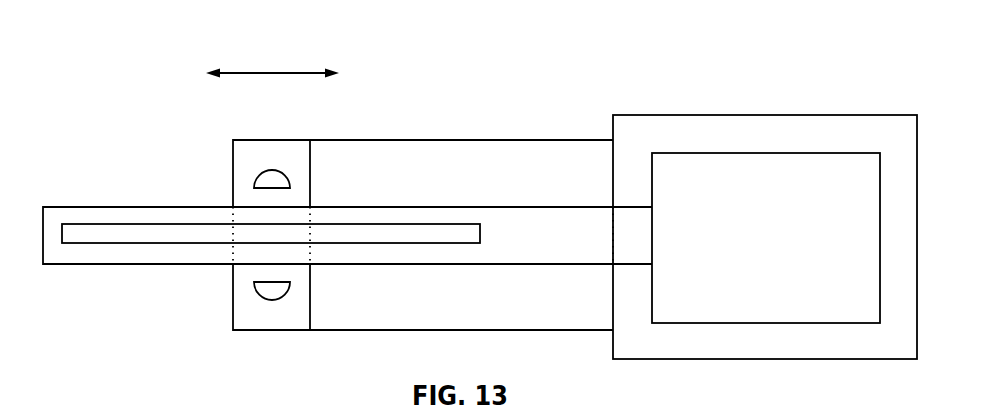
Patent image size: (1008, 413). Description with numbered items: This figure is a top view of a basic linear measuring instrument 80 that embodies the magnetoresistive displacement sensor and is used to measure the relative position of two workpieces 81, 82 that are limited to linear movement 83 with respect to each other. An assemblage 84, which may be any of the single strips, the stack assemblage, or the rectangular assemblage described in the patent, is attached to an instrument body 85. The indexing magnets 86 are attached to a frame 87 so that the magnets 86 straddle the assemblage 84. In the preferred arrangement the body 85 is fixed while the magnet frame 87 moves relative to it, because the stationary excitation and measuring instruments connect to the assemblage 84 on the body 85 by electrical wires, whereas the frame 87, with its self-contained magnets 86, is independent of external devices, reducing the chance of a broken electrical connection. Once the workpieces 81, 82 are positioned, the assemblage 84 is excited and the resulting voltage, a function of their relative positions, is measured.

The linear measuring instrument 80 is at (412, 114).
The workpiece 81 is at (779, 247).
The workpiece 82 is at (779, 149).
The linear movement 83 is at (272, 73).
The assemblage 84 is at (195, 224).
The instrument body 85 is at (552, 249).
The indexing magnet 86 is at (272, 170).
The frame 87 is at (496, 187).